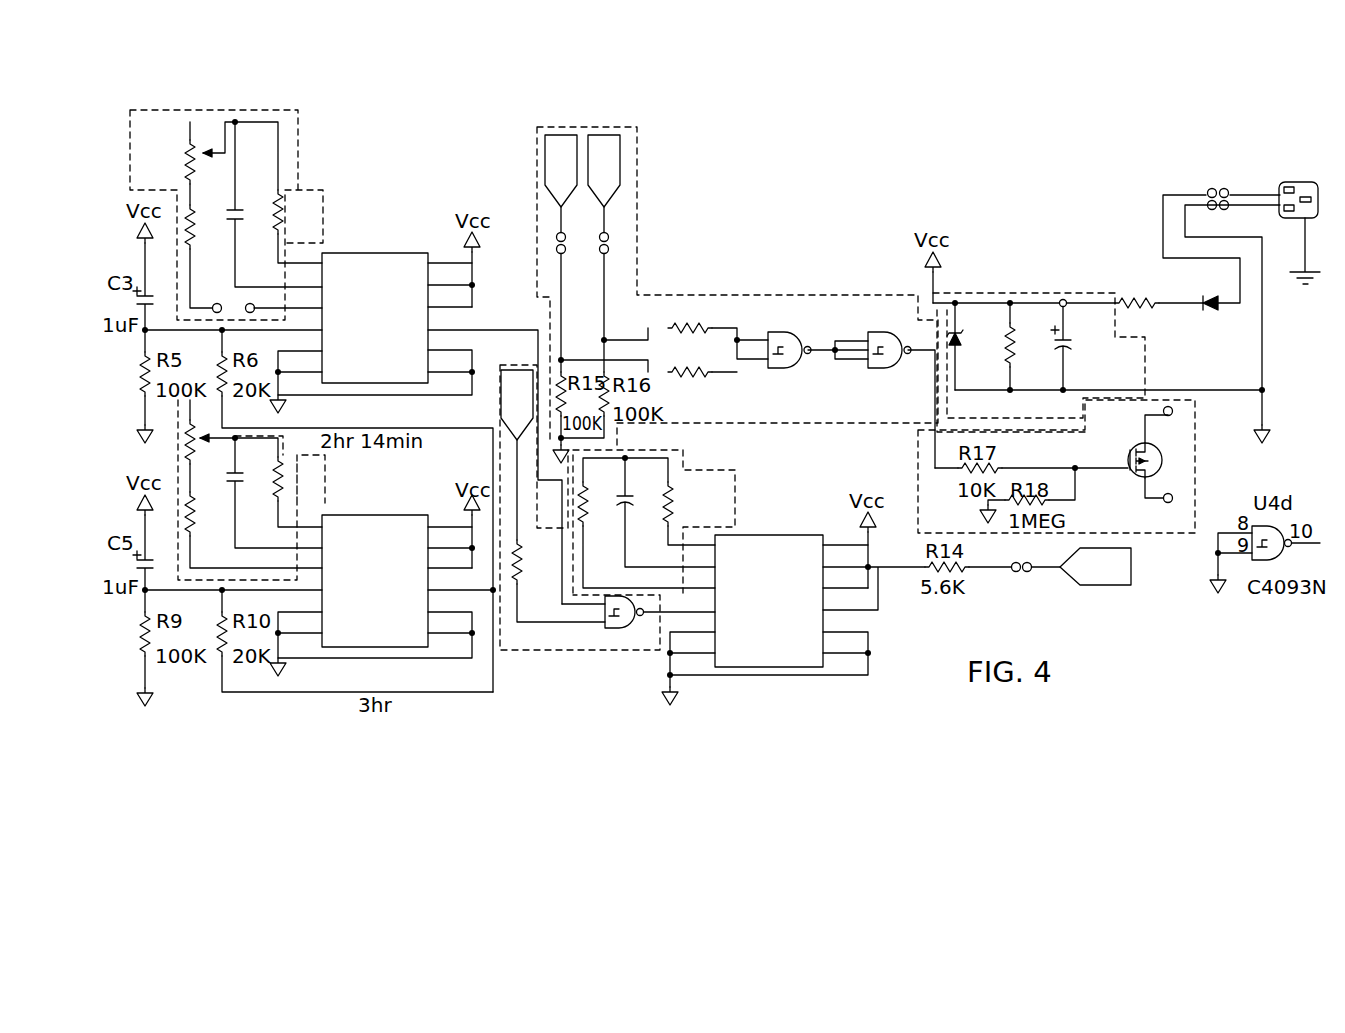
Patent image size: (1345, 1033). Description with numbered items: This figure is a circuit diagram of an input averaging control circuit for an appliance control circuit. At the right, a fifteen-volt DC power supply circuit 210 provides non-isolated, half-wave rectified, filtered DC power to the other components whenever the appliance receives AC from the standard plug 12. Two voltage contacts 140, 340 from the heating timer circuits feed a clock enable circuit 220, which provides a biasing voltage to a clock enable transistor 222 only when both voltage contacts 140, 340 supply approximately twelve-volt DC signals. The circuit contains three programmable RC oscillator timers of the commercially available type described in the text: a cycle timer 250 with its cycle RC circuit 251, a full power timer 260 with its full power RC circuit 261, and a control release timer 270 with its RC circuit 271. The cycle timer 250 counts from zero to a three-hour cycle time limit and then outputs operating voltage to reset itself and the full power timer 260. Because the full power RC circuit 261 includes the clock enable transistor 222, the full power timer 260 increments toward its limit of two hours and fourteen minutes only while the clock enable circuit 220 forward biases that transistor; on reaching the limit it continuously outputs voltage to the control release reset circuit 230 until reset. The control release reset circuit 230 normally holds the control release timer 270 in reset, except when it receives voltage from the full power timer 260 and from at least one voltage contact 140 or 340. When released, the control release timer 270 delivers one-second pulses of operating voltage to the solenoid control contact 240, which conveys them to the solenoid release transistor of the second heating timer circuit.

The voltage contact 140 is at (567, 133).
The voltage contact 340 is at (598, 133).
The full power RC circuit 261 is at (301, 166).
The full power timer 260 is at (409, 249).
The clock enable circuit 220 is at (757, 293).
The 15V DC power supply circuit 210 is at (1006, 292).
The cycle timer 250 is at (406, 506).
The cycle RC circuit 251 is at (327, 487).
The RC circuit 271 is at (700, 476).
The control release timer 270 is at (805, 518).
The control release reset circuit 230 is at (592, 650).
The clock enable transistor 222 is at (1162, 452).
The solenoid control contact 240 is at (1133, 558).
The standard plug 12 is at (1292, 215).